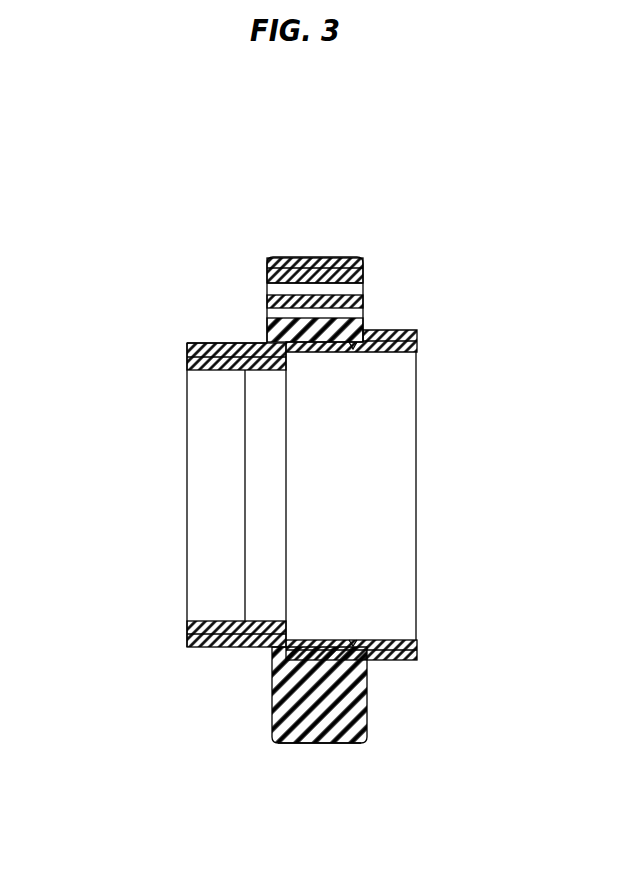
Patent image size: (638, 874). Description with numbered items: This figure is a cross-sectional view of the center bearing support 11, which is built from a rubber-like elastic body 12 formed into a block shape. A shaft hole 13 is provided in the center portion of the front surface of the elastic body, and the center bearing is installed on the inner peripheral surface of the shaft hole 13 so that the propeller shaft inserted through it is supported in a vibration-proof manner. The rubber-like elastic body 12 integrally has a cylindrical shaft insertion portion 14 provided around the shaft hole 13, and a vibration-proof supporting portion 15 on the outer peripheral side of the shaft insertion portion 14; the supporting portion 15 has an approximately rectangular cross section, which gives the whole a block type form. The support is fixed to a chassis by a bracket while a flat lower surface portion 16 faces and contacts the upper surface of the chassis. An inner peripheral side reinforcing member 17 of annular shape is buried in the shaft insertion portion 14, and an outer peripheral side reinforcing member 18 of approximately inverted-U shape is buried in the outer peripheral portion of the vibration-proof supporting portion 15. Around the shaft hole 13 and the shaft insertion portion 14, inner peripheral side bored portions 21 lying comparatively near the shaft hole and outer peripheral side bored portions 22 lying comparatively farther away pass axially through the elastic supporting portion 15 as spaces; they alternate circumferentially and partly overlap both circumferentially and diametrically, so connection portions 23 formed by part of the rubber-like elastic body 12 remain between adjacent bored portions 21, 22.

The center bearing support 11 is at (415, 298).
The rubber-like elastic body 12 is at (363, 670).
The shaft hole 13 is at (203, 500).
The shaft insertion portion 14 is at (188, 633).
The vibration-proof supporting portion 15 is at (275, 712).
The flat lower surface portion 16 is at (310, 743).
The inner peripheral side reinforcing member 17 is at (335, 353).
The outer peripheral side reinforcing member 18 is at (313, 257).
The inner peripheral side bored portions 21 is at (277, 315).
The outer peripheral side bored portions 22 is at (277, 287).
The connection portions 23 is at (277, 302).